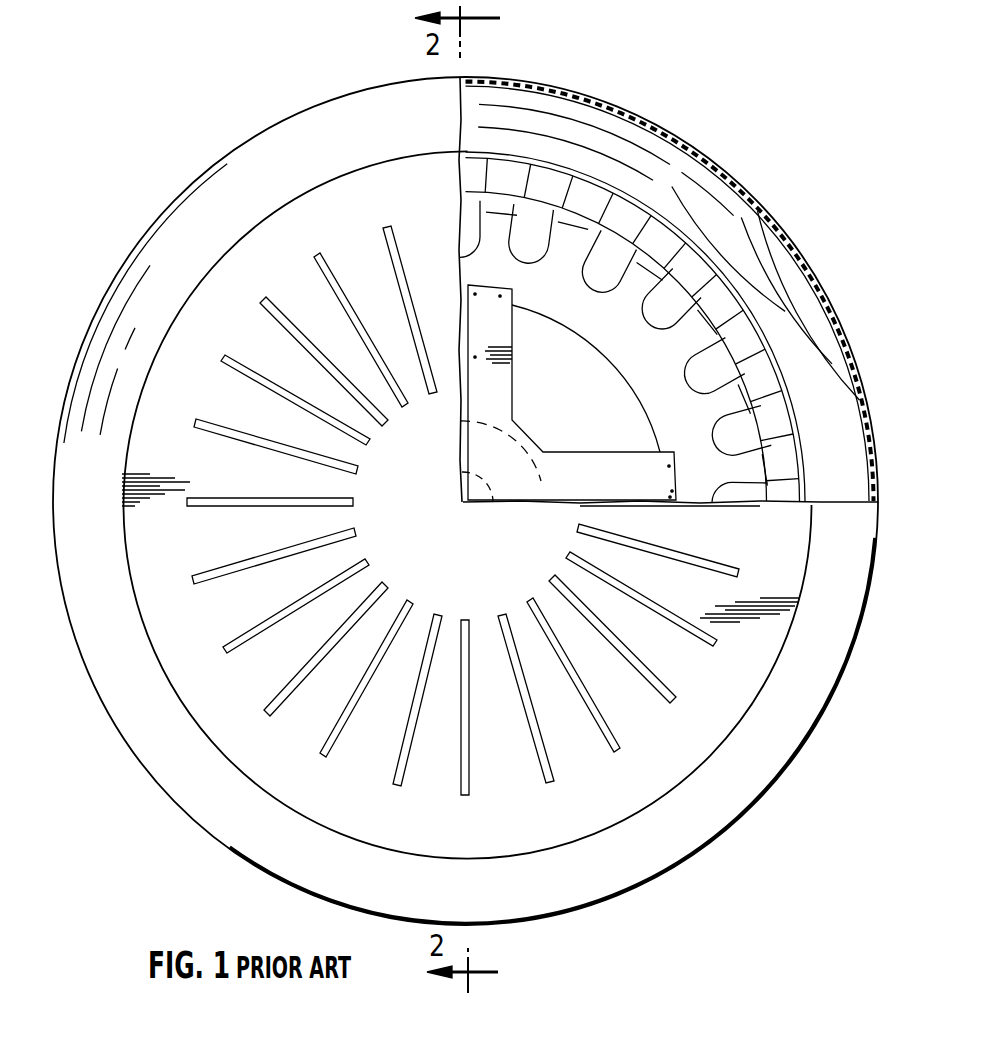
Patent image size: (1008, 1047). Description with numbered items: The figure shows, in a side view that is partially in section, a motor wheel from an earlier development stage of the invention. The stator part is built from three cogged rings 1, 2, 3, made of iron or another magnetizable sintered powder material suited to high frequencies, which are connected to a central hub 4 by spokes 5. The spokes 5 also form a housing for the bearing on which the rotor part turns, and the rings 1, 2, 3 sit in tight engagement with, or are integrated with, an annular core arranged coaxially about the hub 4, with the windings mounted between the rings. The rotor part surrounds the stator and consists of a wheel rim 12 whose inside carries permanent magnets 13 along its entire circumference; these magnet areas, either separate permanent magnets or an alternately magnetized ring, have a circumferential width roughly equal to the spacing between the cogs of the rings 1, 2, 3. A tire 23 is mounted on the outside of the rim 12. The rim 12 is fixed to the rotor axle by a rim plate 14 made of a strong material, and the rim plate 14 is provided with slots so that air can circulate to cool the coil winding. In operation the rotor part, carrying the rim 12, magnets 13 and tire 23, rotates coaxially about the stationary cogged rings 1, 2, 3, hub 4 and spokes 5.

The cogged ring 1 is at (664, 381).
The cogged ring 2 is at (664, 381).
The cogged ring 3 is at (743, 398).
The hub 4 is at (517, 508).
The spokes 5 is at (610, 468).
The wheel rim 12 is at (598, 200).
The permanent magnets 13 is at (676, 232).
The rim plate 14 is at (675, 752).
The tire 23 is at (367, 103).